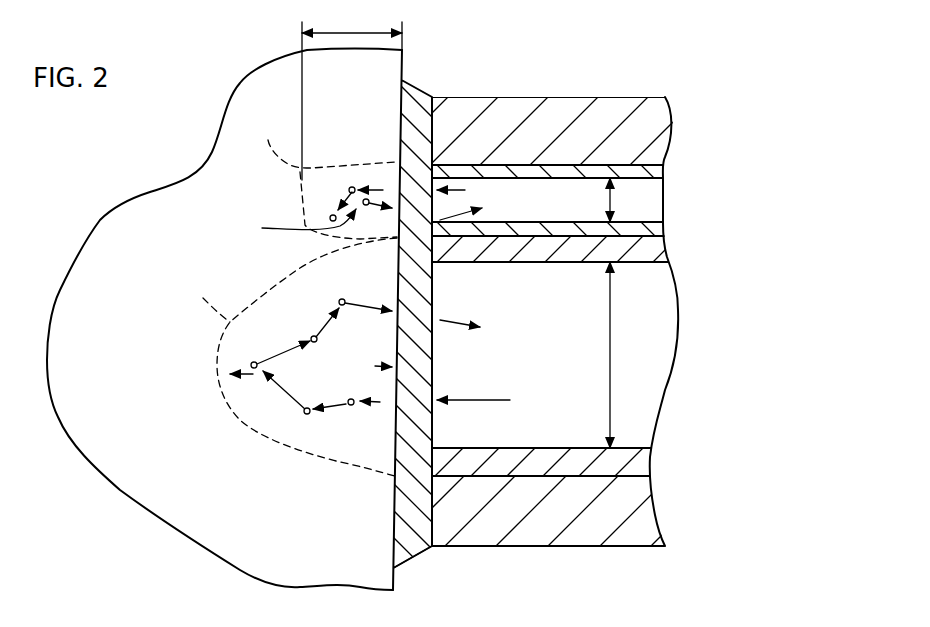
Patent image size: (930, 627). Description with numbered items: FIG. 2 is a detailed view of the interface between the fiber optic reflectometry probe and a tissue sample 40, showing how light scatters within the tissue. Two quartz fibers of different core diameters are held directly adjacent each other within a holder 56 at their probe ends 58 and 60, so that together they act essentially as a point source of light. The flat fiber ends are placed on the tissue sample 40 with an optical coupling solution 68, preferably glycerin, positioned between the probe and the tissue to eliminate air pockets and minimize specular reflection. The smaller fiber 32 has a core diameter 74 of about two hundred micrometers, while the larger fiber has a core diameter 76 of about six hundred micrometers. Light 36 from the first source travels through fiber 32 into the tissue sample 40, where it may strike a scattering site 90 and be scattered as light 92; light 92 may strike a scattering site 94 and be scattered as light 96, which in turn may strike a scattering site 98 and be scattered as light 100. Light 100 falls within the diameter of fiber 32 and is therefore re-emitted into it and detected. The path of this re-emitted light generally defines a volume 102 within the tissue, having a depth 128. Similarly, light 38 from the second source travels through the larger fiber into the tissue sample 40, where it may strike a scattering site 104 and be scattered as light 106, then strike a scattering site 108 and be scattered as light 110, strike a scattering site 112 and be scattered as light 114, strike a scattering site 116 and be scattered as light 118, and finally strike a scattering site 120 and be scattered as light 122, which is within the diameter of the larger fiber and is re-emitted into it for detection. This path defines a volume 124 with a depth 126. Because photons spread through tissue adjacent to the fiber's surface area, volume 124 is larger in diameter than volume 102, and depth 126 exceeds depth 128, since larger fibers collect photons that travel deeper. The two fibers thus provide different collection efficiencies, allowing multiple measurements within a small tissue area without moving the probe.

The tissue sample 40 is at (147, 190).
The optical coupling solution 68 is at (412, 92).
The holder 56 is at (650, 97).
The fiber 32 is at (560, 165).
The probe end 60 is at (460, 440).
The core diameter 74 is at (620, 202).
The core diameter 76 is at (612, 320).
The probe end 58 is at (452, 190).
The light 36 is at (465, 190).
The light 100 is at (438, 222).
The light 122 is at (440, 320).
The light 38 is at (474, 400).
The depth 128 is at (352, 32).
The volume 102 is at (320, 173).
The volume 124 is at (273, 357).
The scattering site 90 is at (349, 189).
The light 92 is at (342, 199).
The scattering site 94 is at (330, 217).
The light 96 is at (288, 225).
The scattering site 98 is at (352, 222).
The light 118 is at (322, 327).
The scattering site 116 is at (313, 338).
The scattering site 120 is at (345, 305).
The light 114 is at (278, 357).
The scattering site 112 is at (252, 365).
The depth 126 is at (253, 374).
The light 110 is at (281, 388).
The scattering site 108 is at (307, 411).
The light 106 is at (333, 408).
The scattering site 104 is at (351, 410).